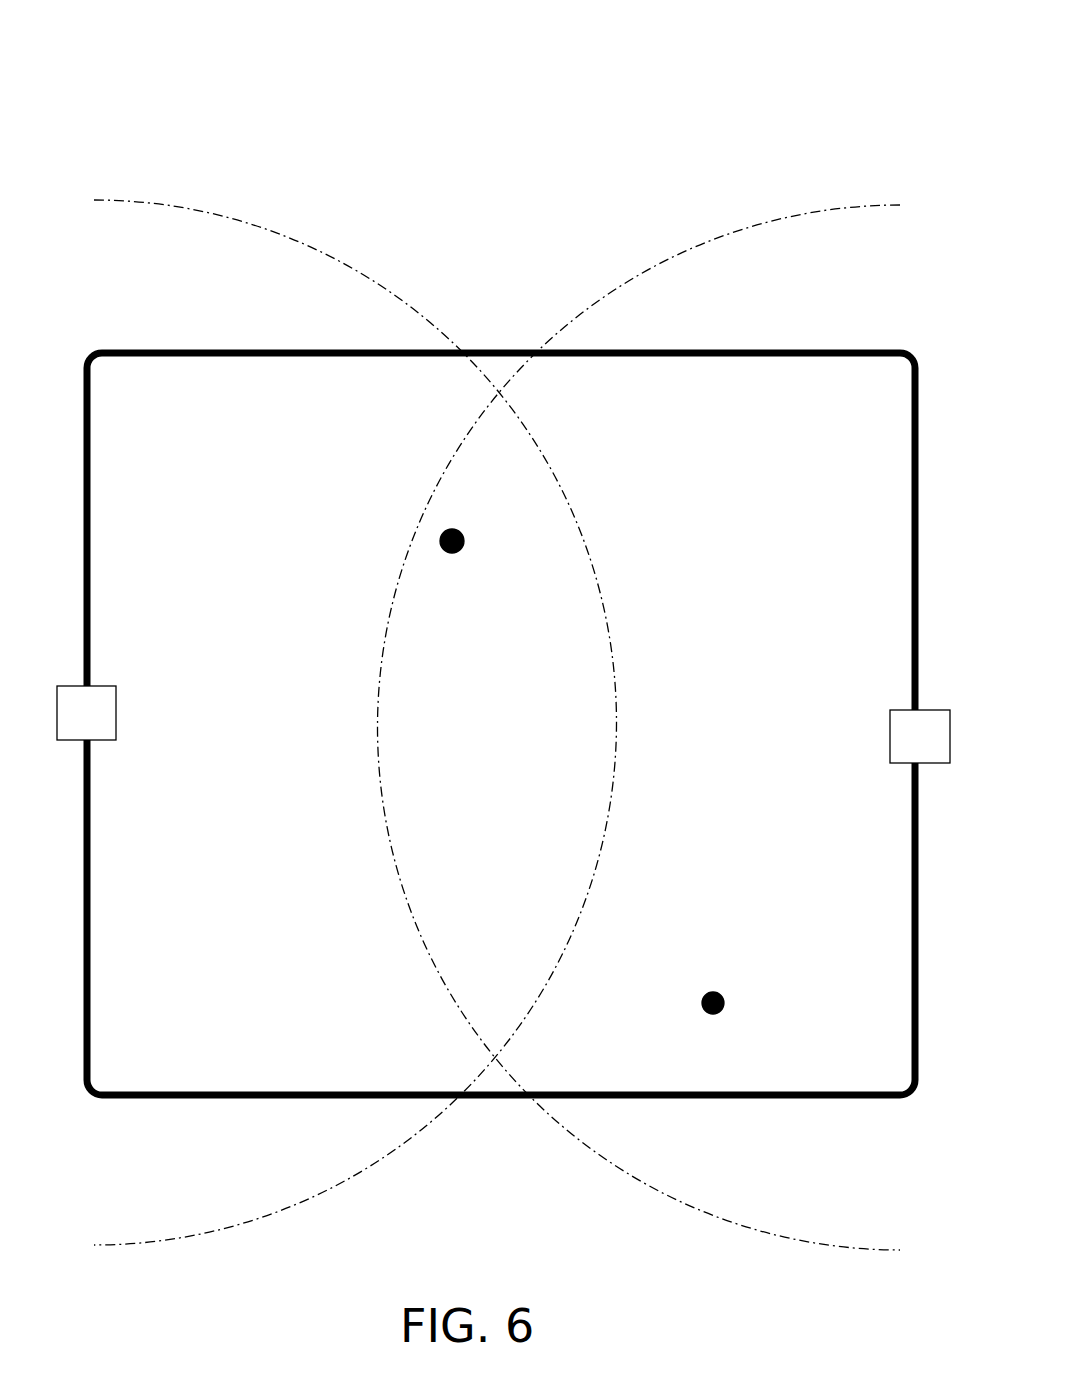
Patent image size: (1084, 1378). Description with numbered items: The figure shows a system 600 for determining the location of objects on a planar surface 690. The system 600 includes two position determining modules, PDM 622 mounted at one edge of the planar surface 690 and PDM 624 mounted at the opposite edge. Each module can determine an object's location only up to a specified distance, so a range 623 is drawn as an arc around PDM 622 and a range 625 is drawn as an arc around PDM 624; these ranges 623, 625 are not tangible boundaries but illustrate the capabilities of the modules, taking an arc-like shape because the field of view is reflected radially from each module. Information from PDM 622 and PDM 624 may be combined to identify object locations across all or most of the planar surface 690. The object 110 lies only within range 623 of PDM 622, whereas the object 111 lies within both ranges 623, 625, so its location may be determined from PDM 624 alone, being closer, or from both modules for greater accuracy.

The system 600 is at (764, 67).
The position determining module 624 is at (86, 713).
The position determining module 622 is at (920, 736).
The range 625 is at (218, 206).
The range 623 is at (729, 225).
The object 111 is at (440, 529).
The object 110 is at (717, 1024).
The planar surface 690 is at (497, 1101).